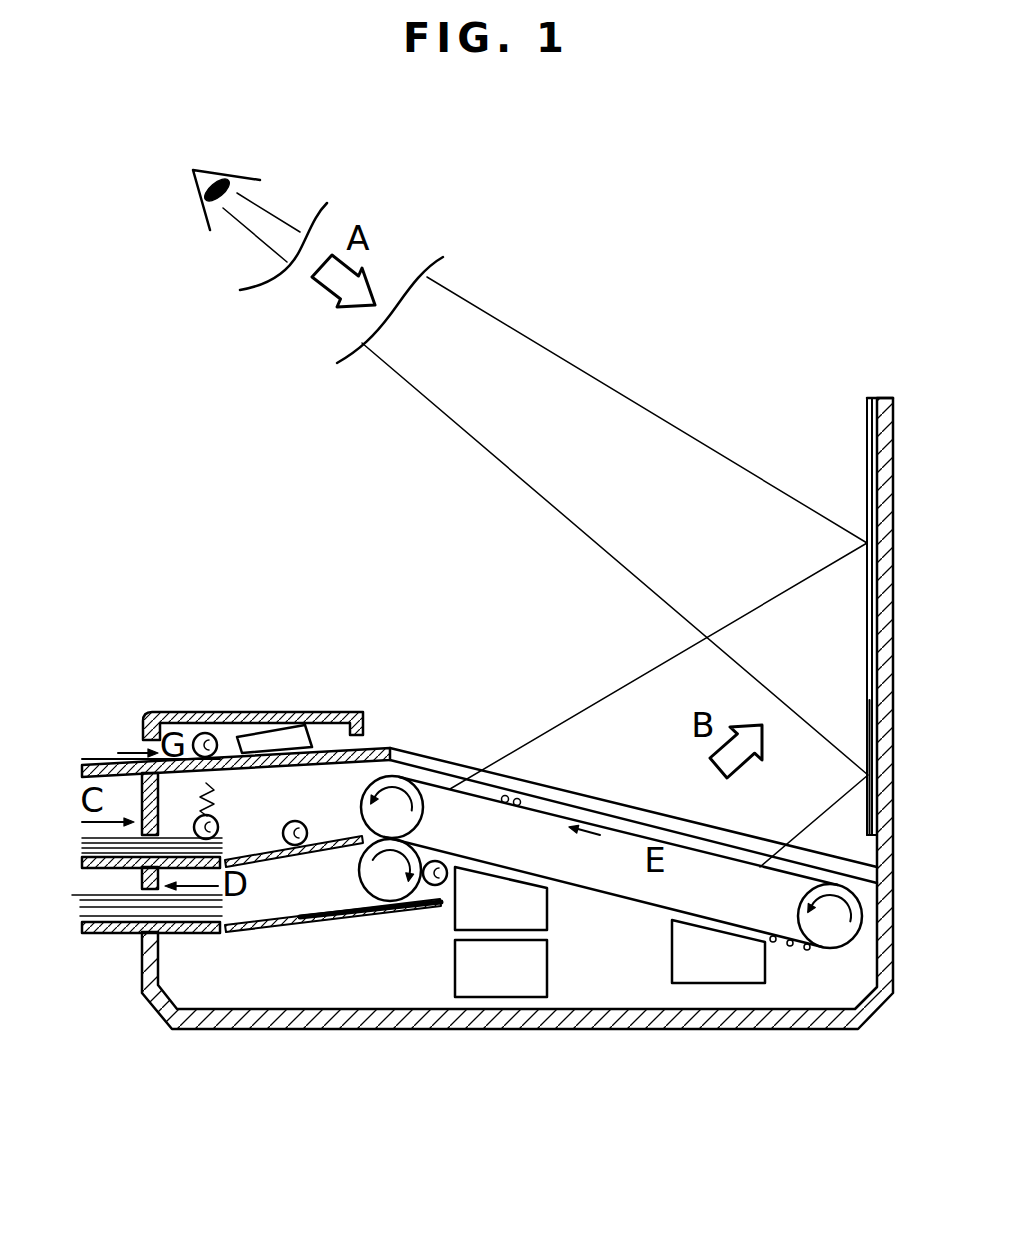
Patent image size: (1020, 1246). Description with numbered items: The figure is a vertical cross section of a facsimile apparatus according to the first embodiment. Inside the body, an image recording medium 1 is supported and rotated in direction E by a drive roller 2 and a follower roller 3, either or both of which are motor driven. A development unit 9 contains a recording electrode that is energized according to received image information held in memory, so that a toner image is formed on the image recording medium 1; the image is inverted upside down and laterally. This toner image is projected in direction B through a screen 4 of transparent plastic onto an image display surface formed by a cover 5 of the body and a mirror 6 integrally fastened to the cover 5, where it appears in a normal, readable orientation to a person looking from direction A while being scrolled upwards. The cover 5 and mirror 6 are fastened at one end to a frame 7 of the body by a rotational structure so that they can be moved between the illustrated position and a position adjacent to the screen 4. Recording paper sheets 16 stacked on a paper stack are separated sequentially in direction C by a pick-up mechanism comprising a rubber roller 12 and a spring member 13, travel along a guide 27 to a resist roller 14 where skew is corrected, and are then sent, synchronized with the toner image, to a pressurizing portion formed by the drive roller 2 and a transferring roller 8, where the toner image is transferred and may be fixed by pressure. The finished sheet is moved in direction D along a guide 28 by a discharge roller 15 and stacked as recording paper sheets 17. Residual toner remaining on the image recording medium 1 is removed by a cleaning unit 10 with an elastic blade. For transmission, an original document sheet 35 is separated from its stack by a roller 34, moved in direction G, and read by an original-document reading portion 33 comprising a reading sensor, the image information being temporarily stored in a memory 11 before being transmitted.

The image recording medium 1 is at (636, 903).
The drive roller 2 is at (407, 817).
The follower roller 3 is at (810, 905).
The screen 4 is at (597, 805).
The cover 5 is at (868, 757).
The mirror 6 is at (874, 590).
The frame 7 is at (190, 1032).
The transferring roller 8 is at (378, 874).
The development unit 9 is at (752, 970).
The cleaning unit 10 is at (538, 913).
The memory 11 is at (538, 985).
The rubber roller 12 is at (218, 828).
The spring member 13 is at (218, 795).
The resist roller 14 is at (299, 824).
The discharge roller 15 is at (436, 886).
The recording paper sheets 16 is at (168, 830).
The recording paper sheets 17 is at (73, 922).
The guide 27 is at (287, 858).
The guide 28 is at (310, 922).
The original-document reading portion 33 is at (294, 737).
The roller 34 is at (208, 738).
The original document sheet 35 is at (103, 757).